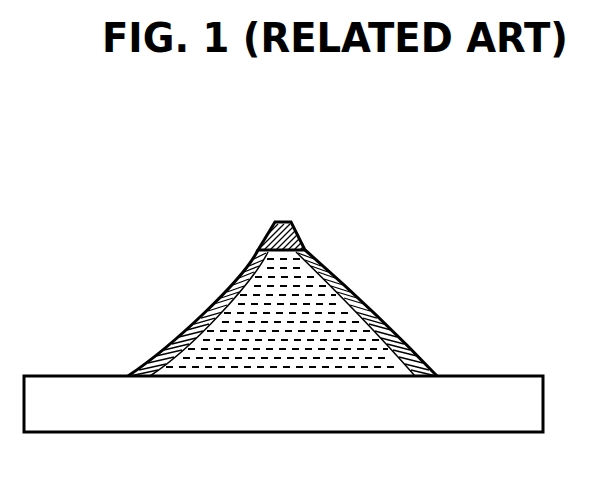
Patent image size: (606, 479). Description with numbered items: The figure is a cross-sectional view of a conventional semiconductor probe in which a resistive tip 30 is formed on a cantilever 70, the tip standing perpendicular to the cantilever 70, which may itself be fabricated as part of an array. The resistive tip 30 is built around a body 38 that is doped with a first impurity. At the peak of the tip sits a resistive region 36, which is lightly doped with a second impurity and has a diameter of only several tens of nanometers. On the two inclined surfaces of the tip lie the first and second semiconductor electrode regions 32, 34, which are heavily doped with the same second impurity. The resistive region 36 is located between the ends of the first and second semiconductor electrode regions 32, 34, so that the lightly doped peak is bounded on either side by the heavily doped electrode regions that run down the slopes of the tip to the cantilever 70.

The resistive tip 30 is at (324, 273).
The first semiconductor electrode region 32 is at (210, 310).
The second semiconductor electrode region 34 is at (363, 310).
The resistive region 36 is at (292, 232).
The body 38 is at (297, 337).
The cantilever 70 is at (479, 383).